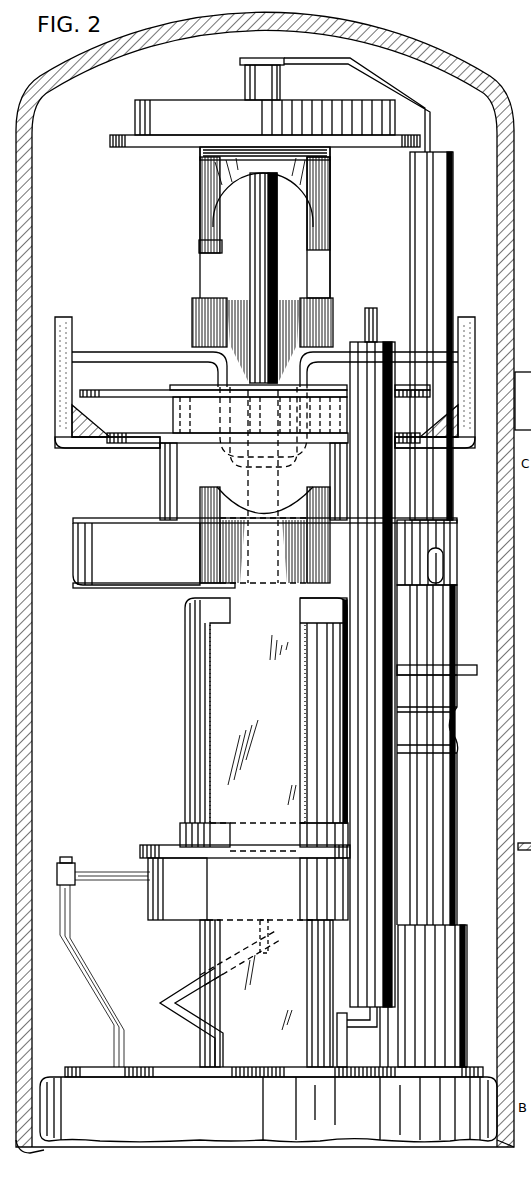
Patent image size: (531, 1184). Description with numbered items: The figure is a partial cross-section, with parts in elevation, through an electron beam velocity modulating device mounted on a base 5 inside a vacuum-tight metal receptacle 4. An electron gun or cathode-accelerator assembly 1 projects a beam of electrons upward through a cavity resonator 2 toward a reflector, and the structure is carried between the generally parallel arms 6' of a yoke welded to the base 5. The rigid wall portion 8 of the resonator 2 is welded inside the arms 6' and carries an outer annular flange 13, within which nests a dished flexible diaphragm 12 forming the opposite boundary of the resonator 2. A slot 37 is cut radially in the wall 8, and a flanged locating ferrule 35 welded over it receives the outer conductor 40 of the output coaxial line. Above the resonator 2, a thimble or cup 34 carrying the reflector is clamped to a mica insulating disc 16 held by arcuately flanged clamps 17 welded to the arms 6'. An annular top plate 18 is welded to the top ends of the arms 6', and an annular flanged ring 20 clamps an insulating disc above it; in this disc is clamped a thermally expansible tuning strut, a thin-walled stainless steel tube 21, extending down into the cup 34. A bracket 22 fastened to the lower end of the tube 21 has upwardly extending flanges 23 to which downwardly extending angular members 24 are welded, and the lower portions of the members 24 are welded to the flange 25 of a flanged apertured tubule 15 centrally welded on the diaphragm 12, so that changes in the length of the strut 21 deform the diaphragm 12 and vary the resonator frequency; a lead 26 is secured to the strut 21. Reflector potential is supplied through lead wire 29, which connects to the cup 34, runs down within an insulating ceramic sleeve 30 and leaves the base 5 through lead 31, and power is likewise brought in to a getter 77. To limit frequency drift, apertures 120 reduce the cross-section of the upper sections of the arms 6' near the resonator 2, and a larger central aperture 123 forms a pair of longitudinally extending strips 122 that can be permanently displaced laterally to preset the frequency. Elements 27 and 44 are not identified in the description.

The electron gun 1 is at (178, 694).
The cavity resonator 2 is at (157, 562).
The vacuum-tight receptacle 4 is at (512, 613).
The base 5 is at (383, 1139).
The arms 6' is at (336, 490).
The rigid wall portion 8 is at (176, 586).
The dished diaphragm 12 is at (128, 519).
The outer annular flange 13 is at (73, 553).
The tubule 15 is at (160, 463).
The insulating disc 16 is at (138, 398).
The arcuately flanged clamps 17 is at (192, 320).
The annular top plate 18 is at (152, 149).
The annular flanged ring 20 is at (135, 114).
The tuning strut 21 is at (278, 322).
The bracket 22 is at (150, 352).
The flanges 23 is at (70, 318).
The angular members 24 is at (90, 450).
The flange 25 is at (124, 437).
The lead 26 is at (421, 104).
The tube 27 is at (442, 227).
The lead wire 29 is at (364, 333).
The insulating ceramic sleeve 30 is at (395, 800).
The lead 31 is at (347, 1050).
The cup 34 is at (172, 386).
The flanged locating ferrule 35 is at (456, 623).
The slot 37 is at (446, 563).
The outer conductor 40 is at (456, 800).
The bellows 44 is at (452, 735).
The getter 77 is at (120, 872).
The apertures 120 is at (232, 490).
The strips 122 is at (200, 248).
The aperture 123 is at (208, 229).